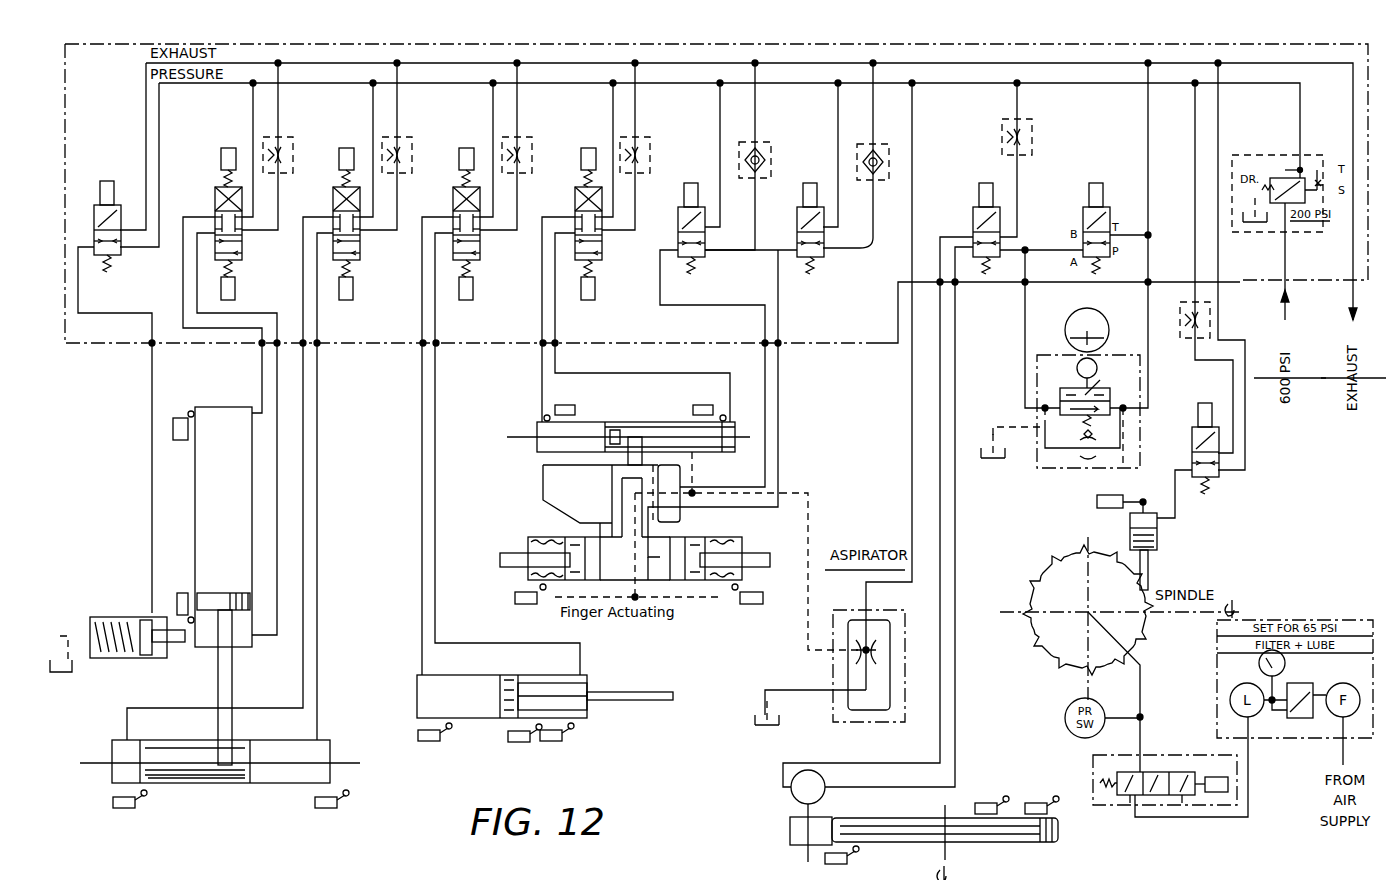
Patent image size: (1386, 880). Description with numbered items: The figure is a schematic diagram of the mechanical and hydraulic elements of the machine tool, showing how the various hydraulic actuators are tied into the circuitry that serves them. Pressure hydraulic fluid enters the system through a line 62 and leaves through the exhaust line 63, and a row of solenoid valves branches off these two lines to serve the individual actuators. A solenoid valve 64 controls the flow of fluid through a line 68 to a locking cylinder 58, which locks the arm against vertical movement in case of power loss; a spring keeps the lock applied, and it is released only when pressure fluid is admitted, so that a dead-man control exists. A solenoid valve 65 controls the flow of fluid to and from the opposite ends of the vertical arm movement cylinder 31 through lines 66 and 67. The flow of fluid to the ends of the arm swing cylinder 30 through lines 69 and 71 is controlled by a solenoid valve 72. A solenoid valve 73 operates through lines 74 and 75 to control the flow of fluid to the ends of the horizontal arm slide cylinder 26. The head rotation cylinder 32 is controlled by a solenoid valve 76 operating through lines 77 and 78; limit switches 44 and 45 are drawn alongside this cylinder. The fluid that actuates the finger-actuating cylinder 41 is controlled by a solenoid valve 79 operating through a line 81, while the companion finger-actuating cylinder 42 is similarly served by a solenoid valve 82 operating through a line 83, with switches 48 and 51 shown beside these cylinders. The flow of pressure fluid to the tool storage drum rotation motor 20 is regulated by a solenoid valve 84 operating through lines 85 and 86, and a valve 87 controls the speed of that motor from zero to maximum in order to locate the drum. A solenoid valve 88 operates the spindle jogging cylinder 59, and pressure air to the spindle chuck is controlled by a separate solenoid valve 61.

The tool storage drum rotation motor 20 is at (793, 801).
The horizontal arm slide cylinder 26 is at (470, 700).
The arm swing cylinder 30 is at (270, 786).
The vertical arm movement cylinder 31 is at (220, 536).
The head rotation cylinder 32 is at (600, 422).
The finger-actuating cylinder 41 is at (548, 536).
The finger-actuating cylinder 42 is at (722, 540).
The limit switch 44 is at (571, 405).
The limit switch 45 is at (705, 406).
The limit switch 48 is at (517, 600).
The limit switch 51 is at (755, 608).
The locking cylinder 58 is at (135, 615).
The spindle jogging cylinder 59 is at (1158, 540).
The solenoid valve 61 is at (1175, 775).
The line 62 is at (334, 85).
The exhaust line 63 is at (146, 102).
The solenoid valve 64 is at (107, 182).
The solenoid valve 65 is at (215, 205).
The line 66 is at (262, 380).
The line 67 is at (280, 447).
The line 68 is at (152, 402).
The line 69 is at (303, 686).
The line 71 is at (320, 682).
The solenoid valve 72 is at (355, 291).
The solenoid valve 73 is at (470, 283).
The line 74 is at (423, 580).
The line 75 is at (436, 506).
The solenoid valve 76 is at (595, 286).
The line 77 is at (543, 373).
The line 78 is at (557, 362).
The solenoid valve 79 is at (688, 200).
The line 81 is at (765, 366).
The solenoid valve 82 is at (825, 246).
The line 83 is at (778, 381).
The solenoid valve 84 is at (978, 190).
The line 85 is at (942, 752).
The line 86 is at (957, 770).
The valve 87 is at (1095, 396).
The solenoid valve 88 is at (1205, 410).